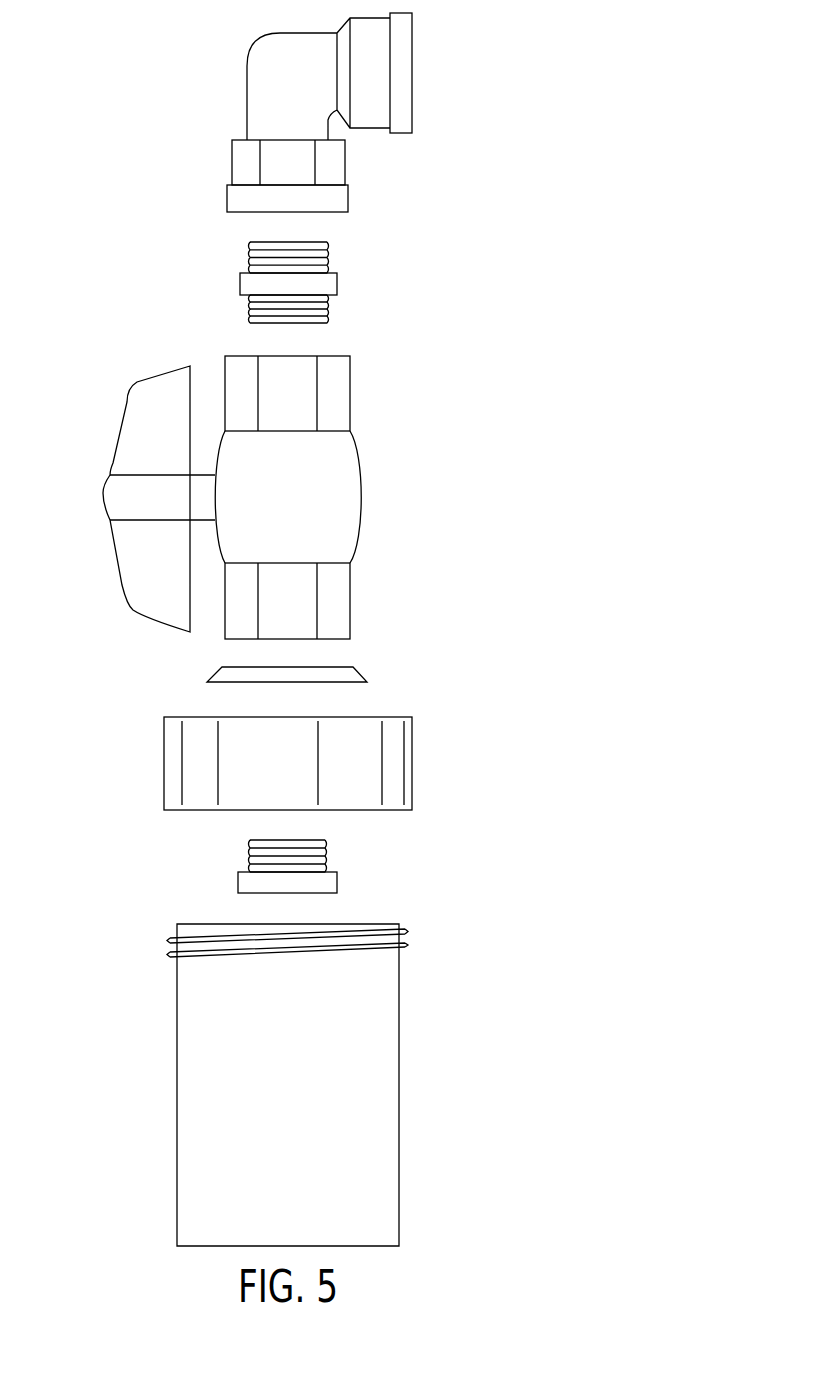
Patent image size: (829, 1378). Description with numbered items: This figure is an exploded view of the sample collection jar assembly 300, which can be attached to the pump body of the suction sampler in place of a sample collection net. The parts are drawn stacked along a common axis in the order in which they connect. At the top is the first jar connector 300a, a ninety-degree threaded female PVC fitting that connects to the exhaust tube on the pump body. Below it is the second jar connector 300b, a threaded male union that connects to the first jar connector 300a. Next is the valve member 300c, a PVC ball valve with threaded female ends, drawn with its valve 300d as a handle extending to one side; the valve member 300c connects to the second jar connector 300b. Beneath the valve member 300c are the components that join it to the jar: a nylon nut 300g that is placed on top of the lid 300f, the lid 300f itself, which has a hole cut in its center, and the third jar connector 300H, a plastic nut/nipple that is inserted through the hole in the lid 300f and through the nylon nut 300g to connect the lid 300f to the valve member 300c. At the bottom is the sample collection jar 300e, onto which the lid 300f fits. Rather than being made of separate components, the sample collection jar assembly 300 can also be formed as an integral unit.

The sample collection jar assembly 300 is at (470, 88).
The first jar connector 300a is at (247, 57).
The second jar connector 300b is at (250, 260).
The valve member 300c is at (373, 350).
The valve 300d is at (127, 403).
The sample collection jar 300e is at (399, 1085).
The lid 300f is at (412, 763).
The nylon nut 300g is at (363, 670).
The third jar connector 300H is at (325, 857).